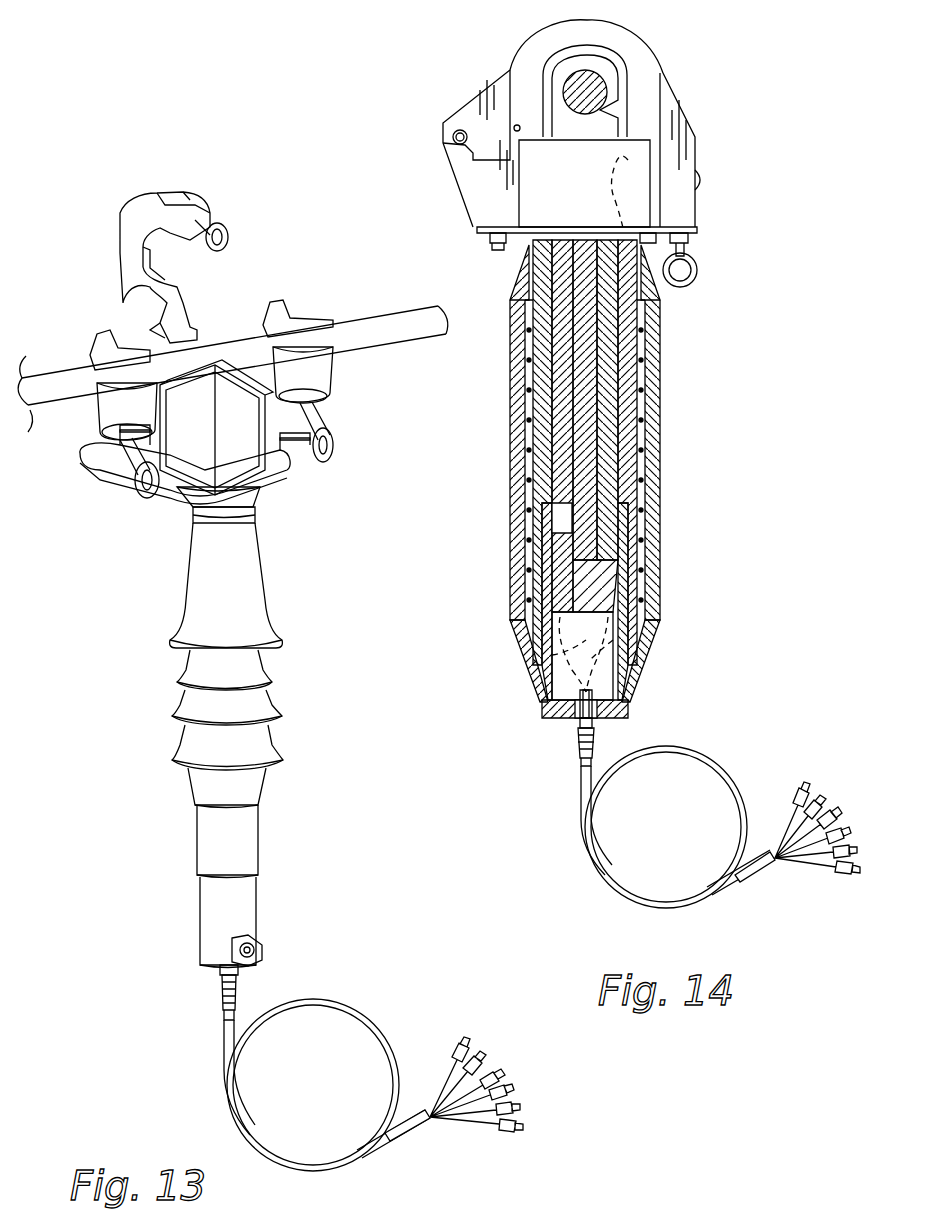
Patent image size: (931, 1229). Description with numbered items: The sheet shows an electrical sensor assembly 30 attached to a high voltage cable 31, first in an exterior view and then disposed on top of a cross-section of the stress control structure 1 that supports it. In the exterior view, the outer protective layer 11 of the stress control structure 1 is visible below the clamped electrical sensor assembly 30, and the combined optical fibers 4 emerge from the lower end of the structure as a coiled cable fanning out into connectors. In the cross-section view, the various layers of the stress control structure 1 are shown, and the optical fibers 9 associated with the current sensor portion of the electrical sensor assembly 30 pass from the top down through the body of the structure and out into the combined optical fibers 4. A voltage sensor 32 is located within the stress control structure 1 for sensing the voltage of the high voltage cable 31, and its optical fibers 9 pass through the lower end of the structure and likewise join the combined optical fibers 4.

In FIG. 13, the stress control structure 1 is at (122, 857).
In FIG. 13, the combined optical fibers 4 is at (185, 1095).
In FIG. 14, the combined optical fibers 4 is at (565, 843).
In FIG. 14, the optical fibers 9 is at (615, 165).
In FIG. 13, the outer protective layer 11 is at (290, 740).
In FIG. 13, the electrical sensor assembly 30 is at (383, 483).
In FIG. 14, the electrical sensor assembly 30 is at (440, 240).
In FIG. 13, the high voltage cable 31 is at (427, 342).
In FIG. 14, the voltage sensor 32 is at (560, 517).